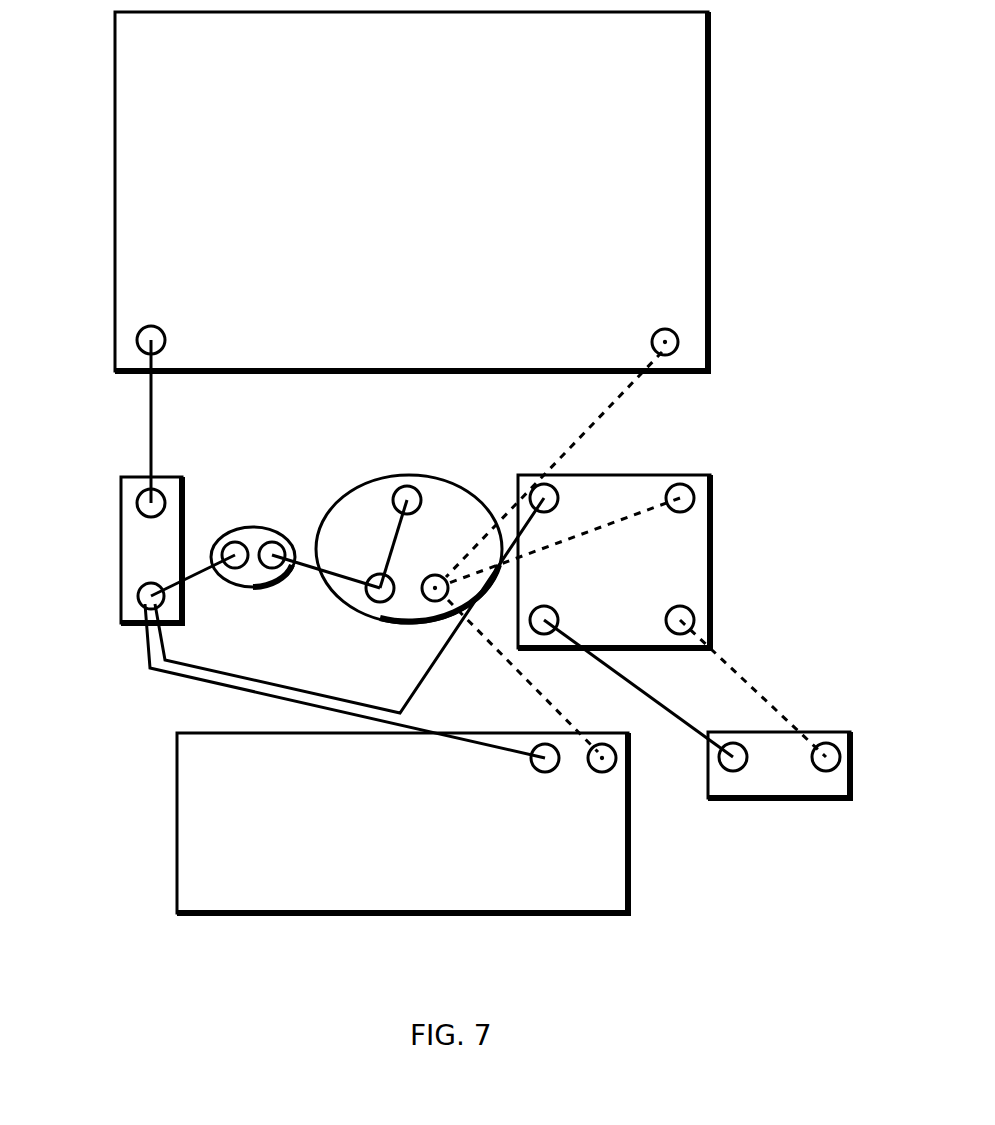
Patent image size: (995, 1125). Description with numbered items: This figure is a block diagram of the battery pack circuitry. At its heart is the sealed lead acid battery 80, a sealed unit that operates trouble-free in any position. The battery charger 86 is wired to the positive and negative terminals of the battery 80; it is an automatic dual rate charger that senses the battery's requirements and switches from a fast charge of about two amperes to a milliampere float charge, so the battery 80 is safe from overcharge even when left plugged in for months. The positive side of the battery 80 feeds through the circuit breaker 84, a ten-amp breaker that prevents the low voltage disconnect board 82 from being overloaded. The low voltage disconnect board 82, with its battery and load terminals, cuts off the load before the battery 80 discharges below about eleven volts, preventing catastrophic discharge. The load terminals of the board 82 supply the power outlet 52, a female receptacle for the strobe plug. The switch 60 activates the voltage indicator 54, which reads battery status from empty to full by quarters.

The sealed lead acid battery 80 is at (708, 195).
The circuit breaker 84 is at (121, 565).
The switch 60 is at (270, 527).
The voltage indicator 54 is at (447, 475).
The low voltage disconnect board 82 is at (710, 505).
The power outlet 52 is at (820, 732).
The battery charger 86 is at (628, 868).